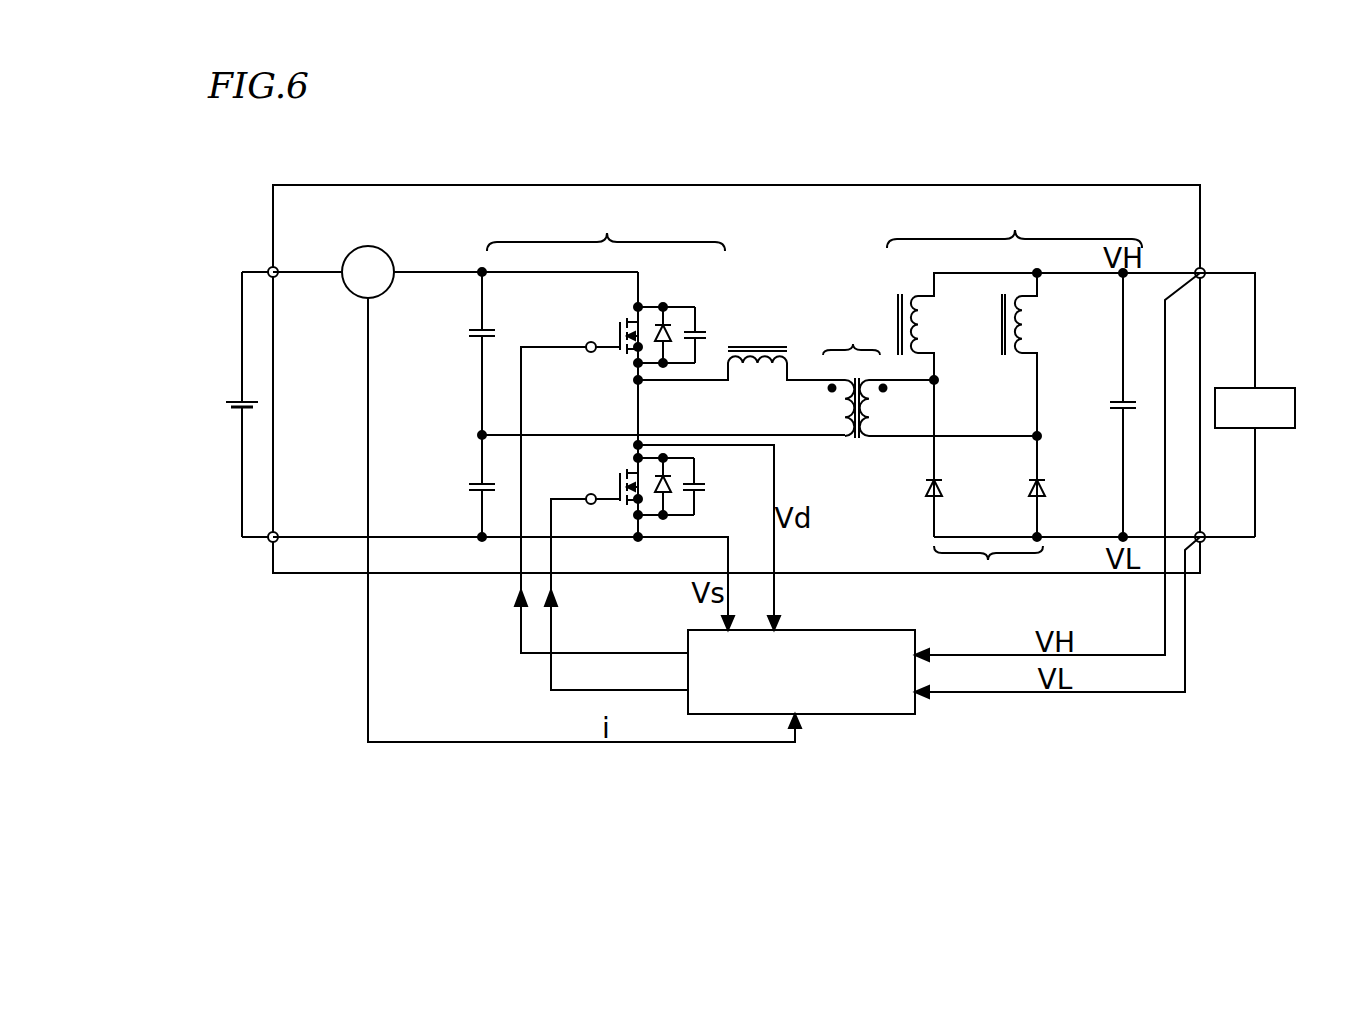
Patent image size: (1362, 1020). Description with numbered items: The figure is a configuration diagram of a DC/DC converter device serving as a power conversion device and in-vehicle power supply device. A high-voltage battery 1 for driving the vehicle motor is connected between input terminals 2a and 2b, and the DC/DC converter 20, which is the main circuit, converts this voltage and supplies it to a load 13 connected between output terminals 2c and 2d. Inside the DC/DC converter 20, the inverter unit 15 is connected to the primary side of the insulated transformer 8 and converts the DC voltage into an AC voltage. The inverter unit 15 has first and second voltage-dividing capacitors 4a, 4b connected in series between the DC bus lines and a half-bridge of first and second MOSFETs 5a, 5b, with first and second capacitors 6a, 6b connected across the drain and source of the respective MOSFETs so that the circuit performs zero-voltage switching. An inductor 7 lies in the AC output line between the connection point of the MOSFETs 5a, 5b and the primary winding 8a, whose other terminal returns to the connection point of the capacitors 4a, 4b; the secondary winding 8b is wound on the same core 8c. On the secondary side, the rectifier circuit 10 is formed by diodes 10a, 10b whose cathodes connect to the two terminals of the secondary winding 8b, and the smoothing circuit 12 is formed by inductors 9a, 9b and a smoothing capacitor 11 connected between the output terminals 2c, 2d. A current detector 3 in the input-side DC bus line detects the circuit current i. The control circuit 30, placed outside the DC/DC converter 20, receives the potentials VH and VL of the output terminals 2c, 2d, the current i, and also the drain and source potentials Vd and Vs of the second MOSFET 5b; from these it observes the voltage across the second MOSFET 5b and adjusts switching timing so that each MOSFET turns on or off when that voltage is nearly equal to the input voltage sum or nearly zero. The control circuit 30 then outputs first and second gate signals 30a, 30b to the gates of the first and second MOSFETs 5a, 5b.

The high-voltage battery 1 is at (232, 397).
The input terminal 2a is at (272, 271).
The input terminal 2b is at (271, 538).
The output terminal 2c is at (1202, 270).
The output terminal 2d is at (1203, 541).
The current detector 3 is at (377, 253).
The first voltage-dividing capacitor 4a is at (473, 324).
The second voltage-dividing capacitor 4b is at (469, 480).
The first MOSFET 5a is at (616, 320).
The second MOSFET 5b is at (616, 473).
The first capacitor 6a is at (698, 324).
The second capacitor 6b is at (706, 500).
The inductor 7 is at (755, 339).
The insulated transformer 8 is at (853, 344).
The primary winding 8a is at (837, 406).
The secondary winding 8b is at (874, 406).
The core 8c is at (856, 394).
The inductor 9a is at (915, 290).
The inductor 9b is at (1002, 353).
The rectifier circuit 10 is at (988, 560).
The diode 10a is at (925, 488).
The diode 10b is at (1024, 488).
The smoothing capacitor 11 is at (1111, 401).
The smoothing circuit 12 is at (998, 223).
The load 13 is at (1269, 388).
The inverter unit 15 is at (590, 223).
The DC/DC converter 20 is at (988, 185).
The control circuit 30 is at (852, 629).
The first gate signal 30a is at (600, 653).
The second gate signal 30b is at (551, 671).